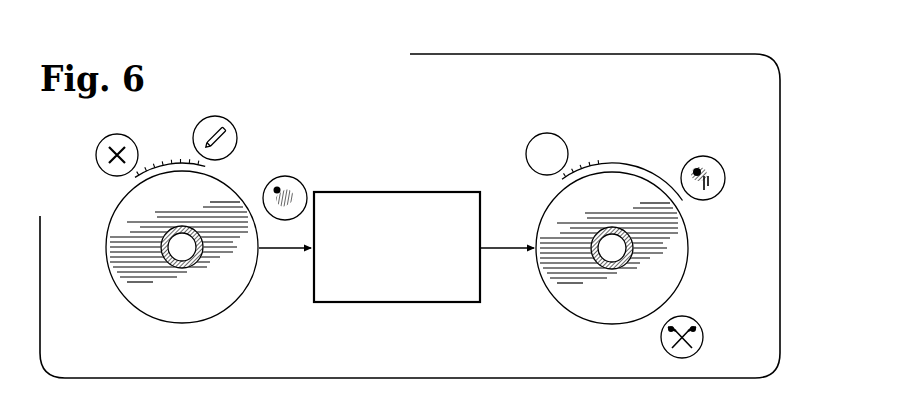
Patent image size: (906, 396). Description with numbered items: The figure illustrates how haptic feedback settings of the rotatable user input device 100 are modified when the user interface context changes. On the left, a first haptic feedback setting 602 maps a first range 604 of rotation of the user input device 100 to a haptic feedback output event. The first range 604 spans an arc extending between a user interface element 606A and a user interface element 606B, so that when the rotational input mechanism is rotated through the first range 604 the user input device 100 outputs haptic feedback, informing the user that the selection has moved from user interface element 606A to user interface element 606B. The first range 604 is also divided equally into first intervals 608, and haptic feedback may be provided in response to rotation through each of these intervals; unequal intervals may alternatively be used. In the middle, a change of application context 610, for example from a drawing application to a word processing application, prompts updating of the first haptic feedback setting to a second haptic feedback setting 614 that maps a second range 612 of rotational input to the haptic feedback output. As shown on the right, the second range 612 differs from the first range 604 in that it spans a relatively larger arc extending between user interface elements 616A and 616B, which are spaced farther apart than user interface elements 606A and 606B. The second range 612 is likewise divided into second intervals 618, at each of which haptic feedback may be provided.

The user input device 100 is at (92, 250).
The first haptic feedback setting 602 is at (187, 91).
The first range 604 is at (207, 170).
The user interface element 606A is at (118, 134).
The user interface element 606B is at (219, 117).
The first intervals 608 is at (166, 151).
The change of application context 610 is at (392, 151).
The second range 612 is at (563, 182).
The second haptic feedback setting 614 is at (651, 91).
The user interface element 616A is at (559, 127).
The user interface element 616B is at (716, 148).
The second intervals 618 is at (633, 149).